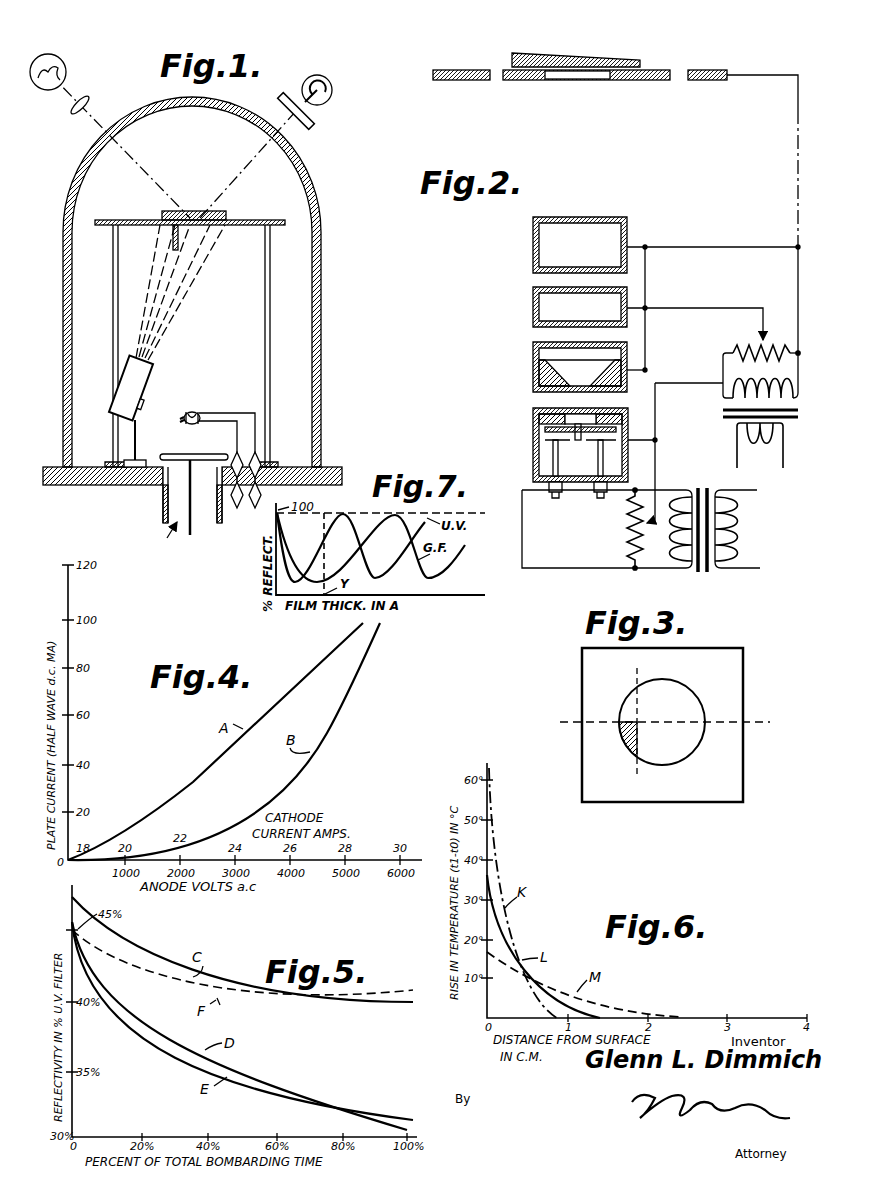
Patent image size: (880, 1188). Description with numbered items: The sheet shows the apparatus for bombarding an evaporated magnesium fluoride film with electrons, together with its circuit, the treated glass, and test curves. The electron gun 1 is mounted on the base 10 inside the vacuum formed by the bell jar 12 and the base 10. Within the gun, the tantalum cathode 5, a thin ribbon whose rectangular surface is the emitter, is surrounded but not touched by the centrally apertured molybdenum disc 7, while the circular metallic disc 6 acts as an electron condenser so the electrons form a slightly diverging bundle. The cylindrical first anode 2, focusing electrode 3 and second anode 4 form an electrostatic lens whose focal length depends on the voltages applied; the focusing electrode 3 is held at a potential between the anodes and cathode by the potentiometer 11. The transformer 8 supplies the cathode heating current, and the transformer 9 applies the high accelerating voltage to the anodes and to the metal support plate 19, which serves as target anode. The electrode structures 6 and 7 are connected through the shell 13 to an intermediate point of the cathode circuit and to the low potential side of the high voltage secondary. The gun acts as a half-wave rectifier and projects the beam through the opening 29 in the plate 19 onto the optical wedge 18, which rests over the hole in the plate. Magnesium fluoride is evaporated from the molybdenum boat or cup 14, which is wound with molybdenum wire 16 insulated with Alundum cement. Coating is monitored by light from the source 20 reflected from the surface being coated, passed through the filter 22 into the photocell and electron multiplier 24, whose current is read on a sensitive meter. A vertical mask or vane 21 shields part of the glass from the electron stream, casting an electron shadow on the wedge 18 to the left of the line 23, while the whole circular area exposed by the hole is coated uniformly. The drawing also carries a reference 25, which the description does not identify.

In FIG. 1, the electron gun 1 is at (152, 380).
In FIG. 2, the electron gun 1 is at (664, 294).
In FIG. 2, the first anode 2 is at (533, 366).
In FIG. 2, the focusing electrode 3 is at (533, 310).
In FIG. 2, the second anode 4 is at (533, 246).
In FIG. 2, the tantalum cathode 5 is at (578, 420).
In FIG. 2, the circular metallic disc 6 is at (550, 416).
In FIG. 2, the molybdenum disc 7 is at (540, 437).
In FIG. 2, the transformer 8 is at (699, 572).
In FIG. 2, the transformer 9 is at (728, 417).
In FIG. 1, the base 10 is at (110, 486).
In FIG. 2, the potentiometer 11 is at (752, 343).
In FIG. 1, the bell jar 12 is at (320, 372).
In FIG. 2, the shell 13 is at (532, 460).
In FIG. 1, the boat or cup 14 is at (198, 412).
In FIG. 1, the molybdenum wire 16 is at (185, 421).
In FIG. 1, the optical wedge 18 is at (162, 215).
In FIG. 2, the optical wedge 18 is at (515, 57).
In FIG. 3, the optical wedge 18 is at (743, 668).
In FIG. 1, the support plate 19 is at (250, 220).
In FIG. 2, the support plate 19 is at (700, 81).
In FIG. 1, the light source 20 is at (62, 66).
In FIG. 1, the vertical mask or vane 21 is at (173, 238).
In FIG. 1, the filter 22 is at (312, 127).
In FIG. 3, the line 23 is at (662, 728).
In FIG. 1, the photocell and electron multiplier 24 is at (316, 75).
In FIG. 3, the section line 25 is at (670, 723).
In FIG. 1, the opening 29 is at (207, 228).
In FIG. 2, the opening 29 is at (565, 80).